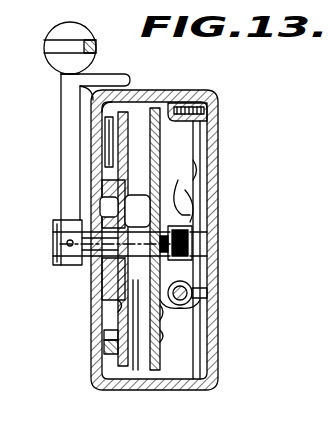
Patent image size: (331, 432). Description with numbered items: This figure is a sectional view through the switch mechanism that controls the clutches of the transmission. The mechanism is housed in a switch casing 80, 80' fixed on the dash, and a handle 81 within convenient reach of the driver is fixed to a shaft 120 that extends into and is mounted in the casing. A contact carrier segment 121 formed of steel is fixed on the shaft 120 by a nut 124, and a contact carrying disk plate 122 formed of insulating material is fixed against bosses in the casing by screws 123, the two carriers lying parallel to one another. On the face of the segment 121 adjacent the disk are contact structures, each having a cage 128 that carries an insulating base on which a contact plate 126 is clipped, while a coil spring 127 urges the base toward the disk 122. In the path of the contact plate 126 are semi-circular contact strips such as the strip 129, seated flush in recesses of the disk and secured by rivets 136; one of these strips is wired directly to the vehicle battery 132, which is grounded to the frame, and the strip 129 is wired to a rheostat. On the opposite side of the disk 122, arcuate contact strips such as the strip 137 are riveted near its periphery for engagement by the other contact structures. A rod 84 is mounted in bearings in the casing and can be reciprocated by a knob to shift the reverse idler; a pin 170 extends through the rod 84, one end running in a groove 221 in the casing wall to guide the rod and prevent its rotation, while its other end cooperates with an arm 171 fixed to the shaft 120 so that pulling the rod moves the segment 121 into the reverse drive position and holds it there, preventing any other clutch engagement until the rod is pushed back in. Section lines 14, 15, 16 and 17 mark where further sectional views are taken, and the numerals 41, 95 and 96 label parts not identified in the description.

The housing 80 is at (134, 240).
The handle 81 is at (60, 62).
The shaft 120 is at (75, 262).
The section line 15 is at (118, 116).
The section line 14 is at (135, 78).
The section line 17 is at (226, 50).
The section line 16 is at (128, 107).
The coil spring 127 is at (130, 150).
The contact plate 126 is at (150, 158).
The arm 171 is at (171, 193).
The nut 124 is at (205, 181).
The casing 80' is at (219, 201).
The rod 41 is at (103, 140).
The screws 123 is at (100, 184).
The cage 128 is at (142, 211).
The contact carrying disk plate 122 is at (105, 302).
The rod 84 is at (214, 248).
The pin 170 is at (214, 268).
The groove 221 is at (214, 294).
The semi-circular contact strip 129 is at (158, 312).
The contact carrier segment 121 is at (158, 335).
The rivets 136 is at (115, 310).
The arcuate contact strip 137 is at (100, 335).
The element 95 is at (58, 423).
The element 96 is at (114, 423).
The vehicle battery 132 is at (249, 424).